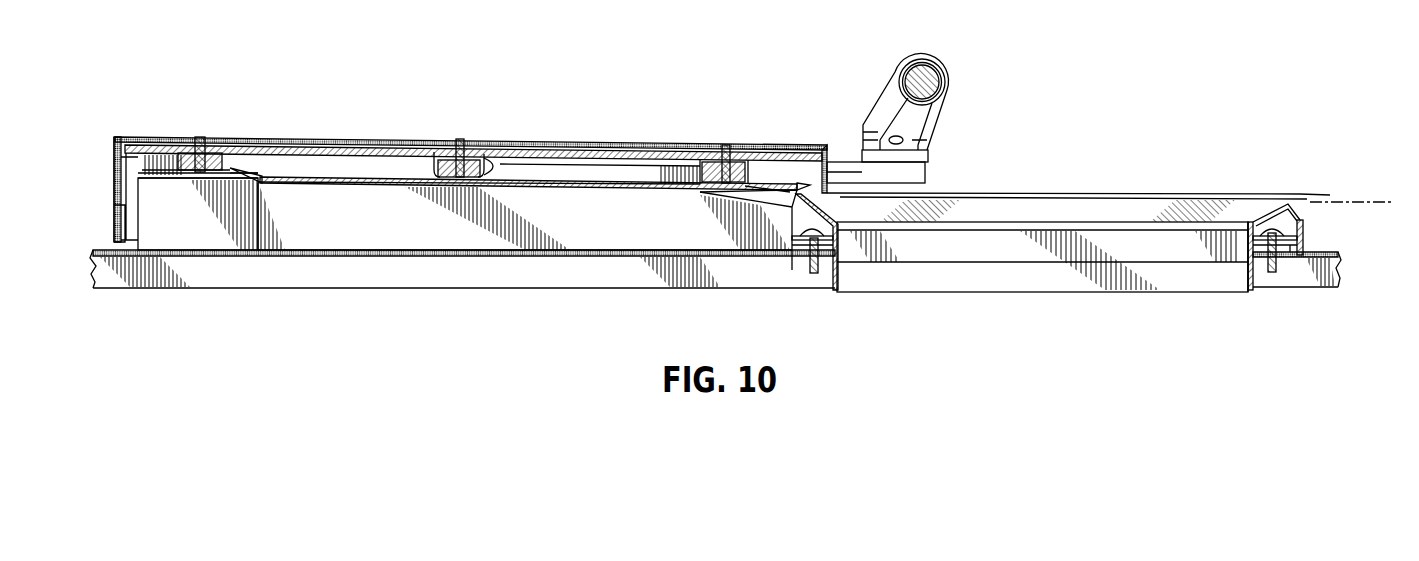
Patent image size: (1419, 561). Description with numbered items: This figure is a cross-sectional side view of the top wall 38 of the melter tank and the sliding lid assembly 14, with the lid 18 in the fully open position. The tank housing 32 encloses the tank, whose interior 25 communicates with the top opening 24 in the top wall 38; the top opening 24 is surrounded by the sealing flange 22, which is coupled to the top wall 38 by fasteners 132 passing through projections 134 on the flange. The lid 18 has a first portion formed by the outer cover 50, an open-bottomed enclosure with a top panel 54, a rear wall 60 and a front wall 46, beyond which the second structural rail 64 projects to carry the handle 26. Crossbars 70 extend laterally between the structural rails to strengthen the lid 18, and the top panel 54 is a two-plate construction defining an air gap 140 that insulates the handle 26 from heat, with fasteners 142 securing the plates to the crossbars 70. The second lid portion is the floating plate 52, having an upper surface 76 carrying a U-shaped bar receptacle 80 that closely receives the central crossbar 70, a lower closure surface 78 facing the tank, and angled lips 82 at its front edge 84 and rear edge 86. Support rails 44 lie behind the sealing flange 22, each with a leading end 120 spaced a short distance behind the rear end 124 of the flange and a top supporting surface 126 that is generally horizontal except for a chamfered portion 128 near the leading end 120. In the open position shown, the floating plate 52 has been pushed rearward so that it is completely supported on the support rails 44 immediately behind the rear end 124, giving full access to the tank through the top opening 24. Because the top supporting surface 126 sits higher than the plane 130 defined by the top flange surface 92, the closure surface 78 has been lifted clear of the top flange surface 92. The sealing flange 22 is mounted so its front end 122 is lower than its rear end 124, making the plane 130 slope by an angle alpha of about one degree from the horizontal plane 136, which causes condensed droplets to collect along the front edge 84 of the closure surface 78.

The sliding lid assembly 14 is at (648, 92).
The lid 18 is at (151, 135).
The sealing flange 22 is at (982, 216).
The top opening 24 is at (1245, 223).
The interior 25 is at (1048, 290).
The handle 26 is at (920, 78).
The tank housing 32 is at (334, 275).
The top wall 38 is at (432, 247).
The support rail 44 is at (172, 238).
The front wall 46 is at (833, 166).
The outer cover 50 is at (614, 146).
The floating plate 52 is at (398, 176).
The top panel 54 is at (312, 156).
The rear wall 60 is at (114, 165).
The second structural rail 64 is at (553, 168).
The crossbar 70 is at (190, 156).
The upper surface 76 is at (668, 182).
The closure surface 78 is at (540, 188).
The bar receptacle 80 is at (490, 165).
The angled lip 82 is at (255, 173).
The front edge 84 is at (775, 206).
The rear edge 86 is at (255, 182).
The top flange surface 92 is at (968, 194).
The leading end 120 is at (790, 257).
The front end 122 is at (1260, 242).
The rear end 124 is at (828, 243).
The top supporting surface 126 is at (226, 172).
The chamfered portion 128 is at (752, 199).
The plane 130 is at (1362, 204).
The fastener 132 is at (1272, 274).
The projection 134 is at (1296, 243).
The horizontal plane 136 is at (1336, 201).
The air gap 140 is at (822, 164).
The fastener 142 is at (199, 136).